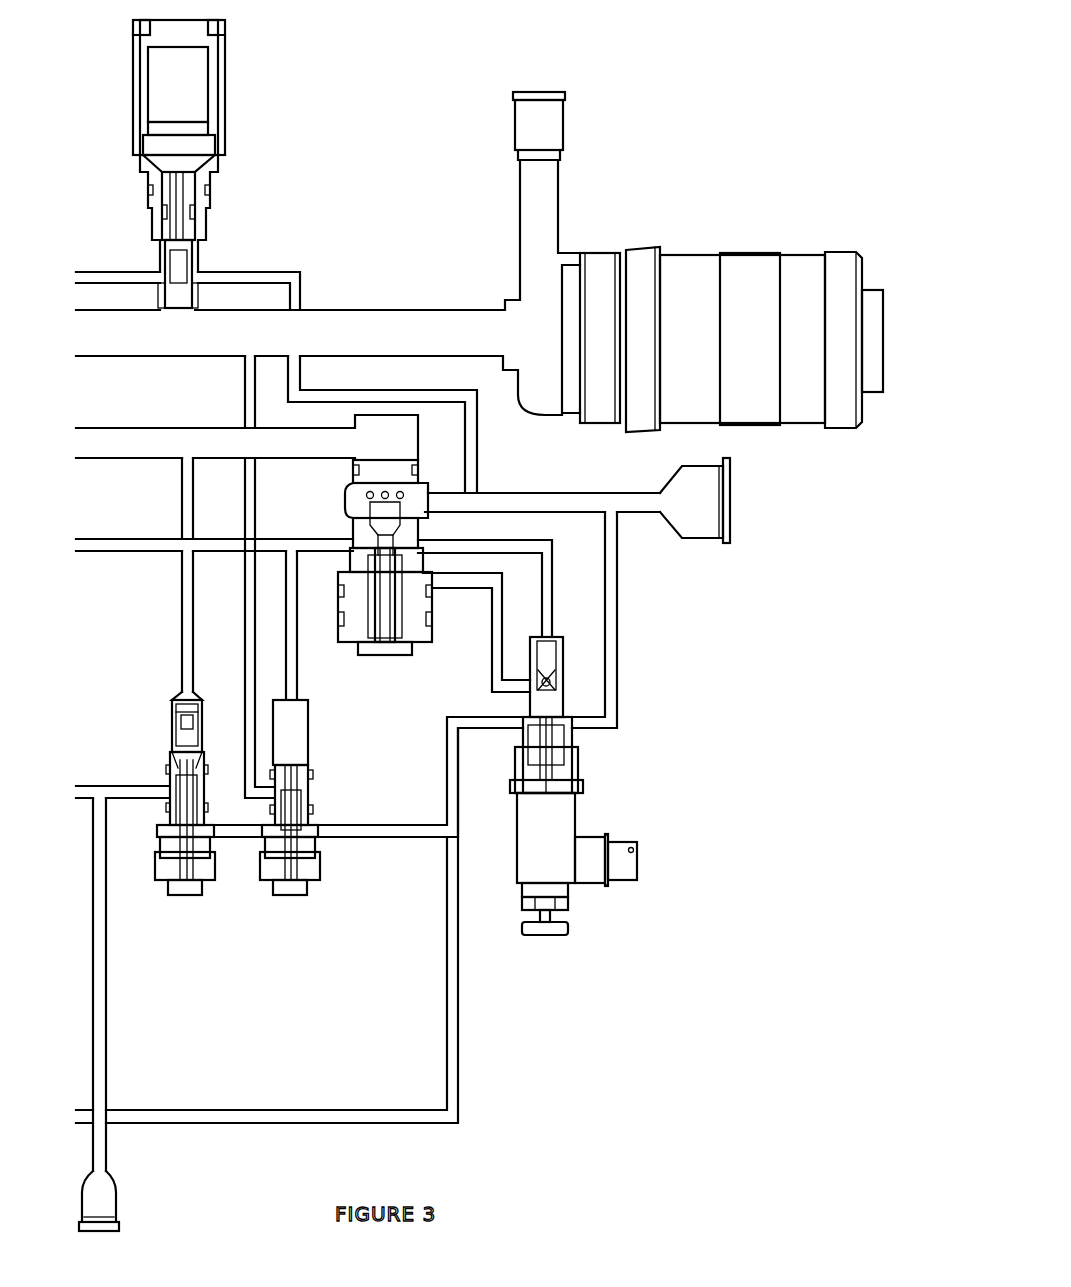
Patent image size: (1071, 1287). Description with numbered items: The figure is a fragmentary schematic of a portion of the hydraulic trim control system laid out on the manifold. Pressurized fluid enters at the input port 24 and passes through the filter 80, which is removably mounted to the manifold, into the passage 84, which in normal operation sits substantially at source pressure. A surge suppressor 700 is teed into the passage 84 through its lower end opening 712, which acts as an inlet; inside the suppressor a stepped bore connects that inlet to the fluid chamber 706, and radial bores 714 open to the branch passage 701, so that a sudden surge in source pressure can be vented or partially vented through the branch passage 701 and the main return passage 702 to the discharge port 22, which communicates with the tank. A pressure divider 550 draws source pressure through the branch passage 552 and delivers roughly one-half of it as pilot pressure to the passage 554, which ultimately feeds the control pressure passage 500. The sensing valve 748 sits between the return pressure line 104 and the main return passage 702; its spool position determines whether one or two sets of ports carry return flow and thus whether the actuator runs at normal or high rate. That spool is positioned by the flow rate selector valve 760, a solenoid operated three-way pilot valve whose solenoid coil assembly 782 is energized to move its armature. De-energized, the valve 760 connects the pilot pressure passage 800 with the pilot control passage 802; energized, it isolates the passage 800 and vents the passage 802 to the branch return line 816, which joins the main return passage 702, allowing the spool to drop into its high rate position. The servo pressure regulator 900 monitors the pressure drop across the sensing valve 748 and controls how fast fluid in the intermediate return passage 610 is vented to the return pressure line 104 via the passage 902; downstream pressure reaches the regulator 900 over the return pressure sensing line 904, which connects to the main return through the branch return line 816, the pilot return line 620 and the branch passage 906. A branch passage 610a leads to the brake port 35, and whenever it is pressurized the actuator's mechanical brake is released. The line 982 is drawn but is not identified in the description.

The discharge port 22 is at (688, 512).
The port 24 is at (522, 134).
The brake port 35 is at (86, 1218).
The filter 80 is at (730, 352).
The passage 84 is at (203, 346).
The return pressure line 104 is at (158, 459).
The control pressure passage 500 is at (135, 543).
The pressure divider 550 is at (317, 794).
The branch passage 552 is at (254, 507).
The passage 554 is at (293, 684).
The intermediate return passage 610 is at (150, 790).
The branch passage 610a is at (99, 962).
The pilot return line 620 is at (406, 1120).
The surge suppressor 700 is at (212, 164).
The branch passage 701 is at (303, 300).
The main return passage 702 is at (553, 512).
The fluid chamber 706 is at (160, 104).
The lower end opening 712 is at (170, 310).
The radial bores 714 is at (200, 281).
The sensing valve 748 is at (372, 660).
The flow rate selector valve 760 is at (596, 786).
The solenoid coil assembly 782 is at (590, 845).
The pilot pressure passage 800 is at (550, 581).
The pilot control passage 802 is at (497, 650).
The branch return line 816 is at (613, 627).
The servo pressure regulator 900 is at (205, 719).
The passage 902 is at (190, 578).
The return pressure sensing line 904 is at (235, 830).
The branch passage 906 is at (343, 826).
The line 982 is at (130, 277).